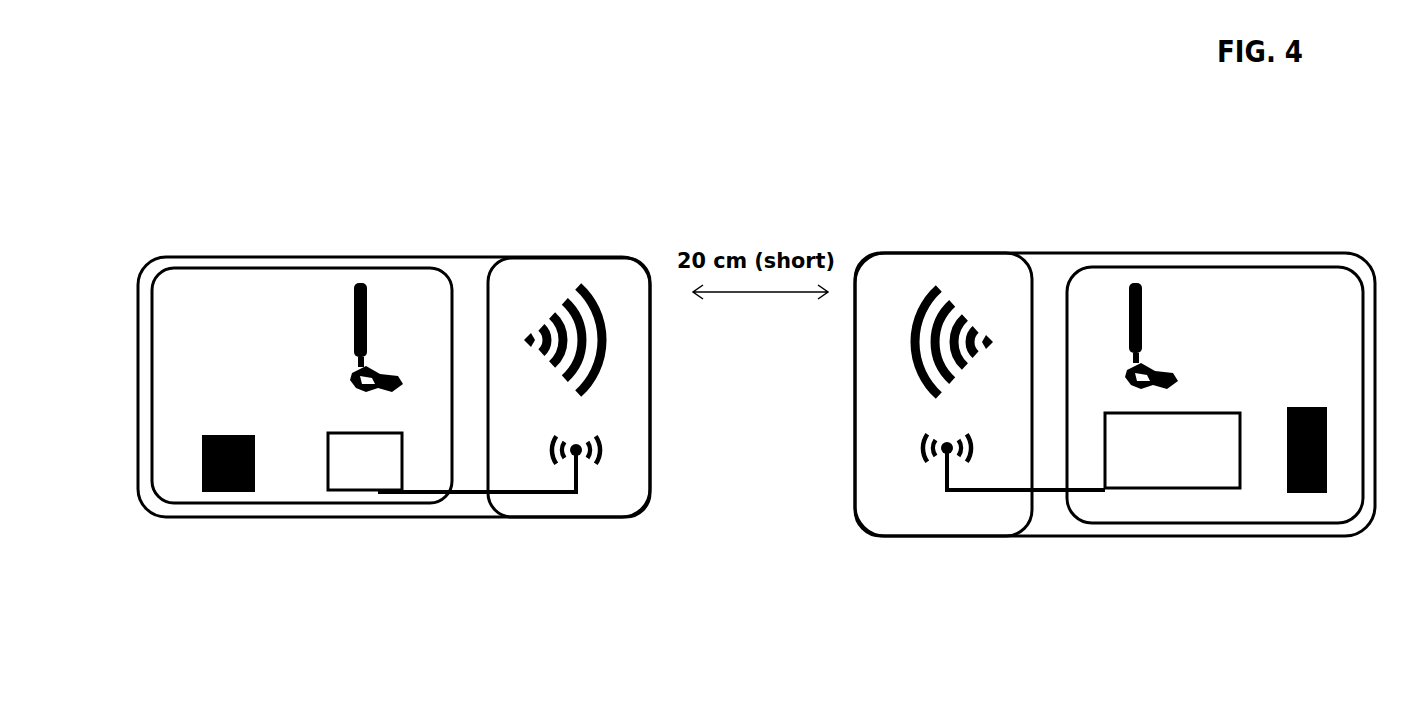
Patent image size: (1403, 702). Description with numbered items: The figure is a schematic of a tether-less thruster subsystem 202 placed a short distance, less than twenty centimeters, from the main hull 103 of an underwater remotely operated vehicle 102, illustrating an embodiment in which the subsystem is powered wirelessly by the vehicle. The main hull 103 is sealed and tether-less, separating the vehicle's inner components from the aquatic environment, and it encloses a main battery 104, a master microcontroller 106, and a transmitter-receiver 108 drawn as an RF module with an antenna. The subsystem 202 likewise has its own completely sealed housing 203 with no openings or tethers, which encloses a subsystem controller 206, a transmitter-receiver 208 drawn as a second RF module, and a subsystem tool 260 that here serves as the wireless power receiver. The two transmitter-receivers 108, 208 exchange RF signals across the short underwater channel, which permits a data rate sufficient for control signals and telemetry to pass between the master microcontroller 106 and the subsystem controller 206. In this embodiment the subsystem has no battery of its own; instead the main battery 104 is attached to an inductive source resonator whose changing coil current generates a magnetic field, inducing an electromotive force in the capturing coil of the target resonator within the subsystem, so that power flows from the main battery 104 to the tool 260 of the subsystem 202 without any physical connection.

The ROV 102 is at (1373, 198).
The main hull 103 is at (1366, 262).
The main battery 104 is at (1210, 480).
The master microcontroller 106 is at (1307, 493).
The transmitter-receiver 108 is at (1113, 337).
The subsystem 202 is at (655, 170).
The housing 203 is at (165, 270).
The controller 206 is at (224, 492).
The transmitter-receiver 208 is at (222, 302).
The subsystem tool 260 is at (338, 480).